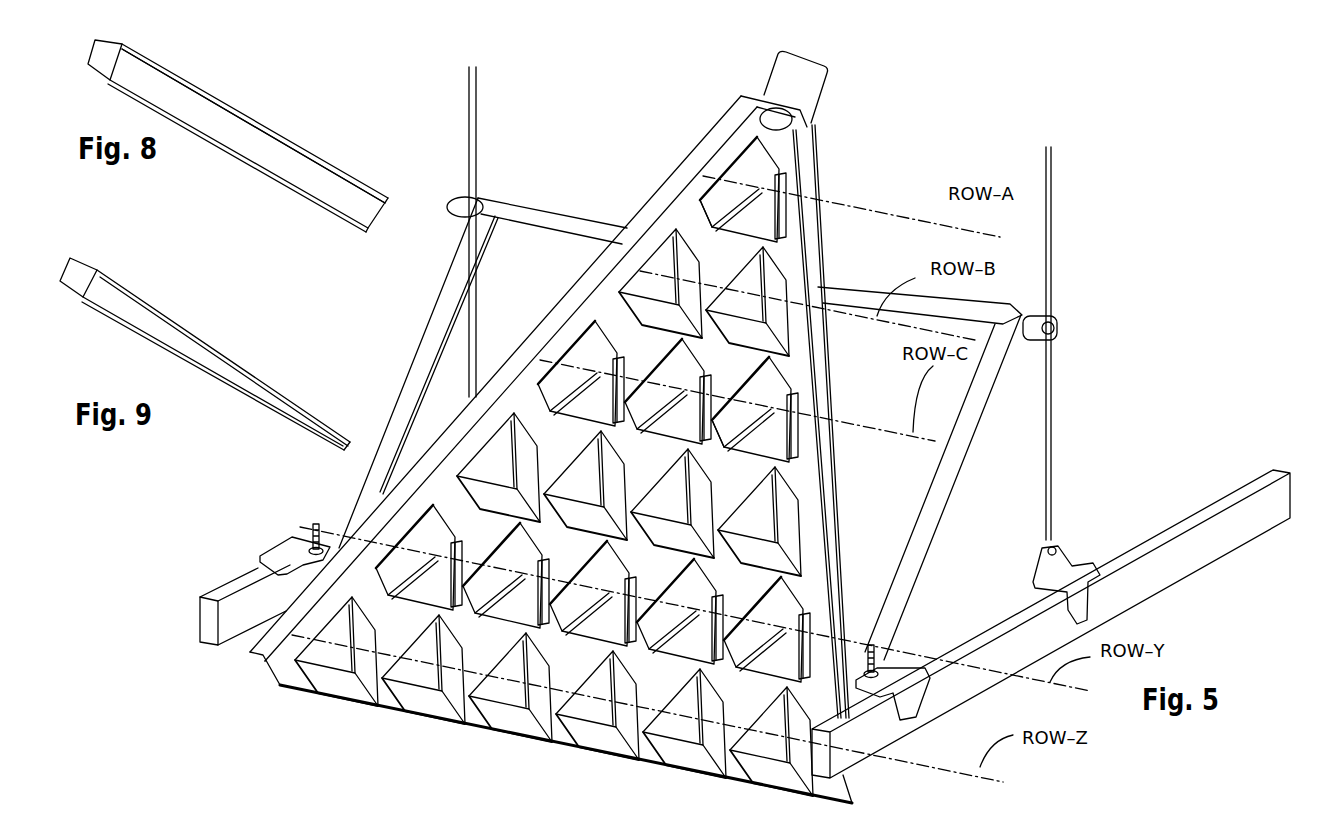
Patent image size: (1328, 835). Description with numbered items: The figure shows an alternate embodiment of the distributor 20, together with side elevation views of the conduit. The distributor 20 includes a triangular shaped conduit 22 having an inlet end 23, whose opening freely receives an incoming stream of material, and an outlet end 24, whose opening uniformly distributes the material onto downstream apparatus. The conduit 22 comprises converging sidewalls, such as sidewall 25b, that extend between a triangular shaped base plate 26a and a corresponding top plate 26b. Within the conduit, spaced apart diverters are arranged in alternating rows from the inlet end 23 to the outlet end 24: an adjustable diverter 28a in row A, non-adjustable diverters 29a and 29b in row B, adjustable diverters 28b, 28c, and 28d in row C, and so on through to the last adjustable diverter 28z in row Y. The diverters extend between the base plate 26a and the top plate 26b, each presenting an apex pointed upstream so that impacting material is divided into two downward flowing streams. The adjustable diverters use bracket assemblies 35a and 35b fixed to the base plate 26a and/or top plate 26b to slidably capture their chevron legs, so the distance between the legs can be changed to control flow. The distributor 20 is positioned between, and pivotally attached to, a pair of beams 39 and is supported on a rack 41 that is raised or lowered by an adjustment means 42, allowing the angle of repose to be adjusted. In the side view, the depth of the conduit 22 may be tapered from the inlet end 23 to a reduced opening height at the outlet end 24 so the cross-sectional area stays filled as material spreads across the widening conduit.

In FIG. 8, the distributor 20 is at (210, 60).
In FIG. 5, the distributor 20 is at (660, 142).
In FIG. 9, the conduit 22 is at (210, 350).
In FIG. 5, the conduit 22 is at (647, 203).
In FIG. 9, the inlet end 23 is at (92, 266).
In FIG. 5, the inlet end 23 is at (755, 95).
In FIG. 9, the outlet end 24 is at (352, 440).
In FIG. 5, the outlet end 24 is at (430, 735).
In FIG. 8, the sidewall 25b is at (287, 162).
In FIG. 8, the base plate 26a is at (217, 138).
In FIG. 9, the base plate 26a is at (128, 325).
In FIG. 5, the base plate 26a is at (395, 617).
In FIG. 8, the top plate 26b is at (230, 103).
In FIG. 9, the top plate 26b is at (143, 295).
In FIG. 5, the adjustable diverter 28a is at (770, 167).
In FIG. 5, the adjustable diverter 28b is at (563, 375).
In FIG. 5, the adjustable diverter 28c is at (663, 380).
In FIG. 5, the adjustable diverter 28d is at (800, 380).
In FIG. 5, the adjustable diverter 28z is at (800, 592).
In FIG. 5, the non-adjustable diverter 29a is at (648, 278).
In FIG. 5, the non-adjustable diverter 29b is at (800, 323).
In FIG. 5, the bracket assembly 35a is at (787, 215).
In FIG. 5, the bracket assembly 35b is at (744, 222).
In FIG. 5, the beam 39 is at (1190, 550).
In FIG. 5, the rack 41 is at (973, 388).
In FIG. 5, the adjustment means 42 is at (473, 118).